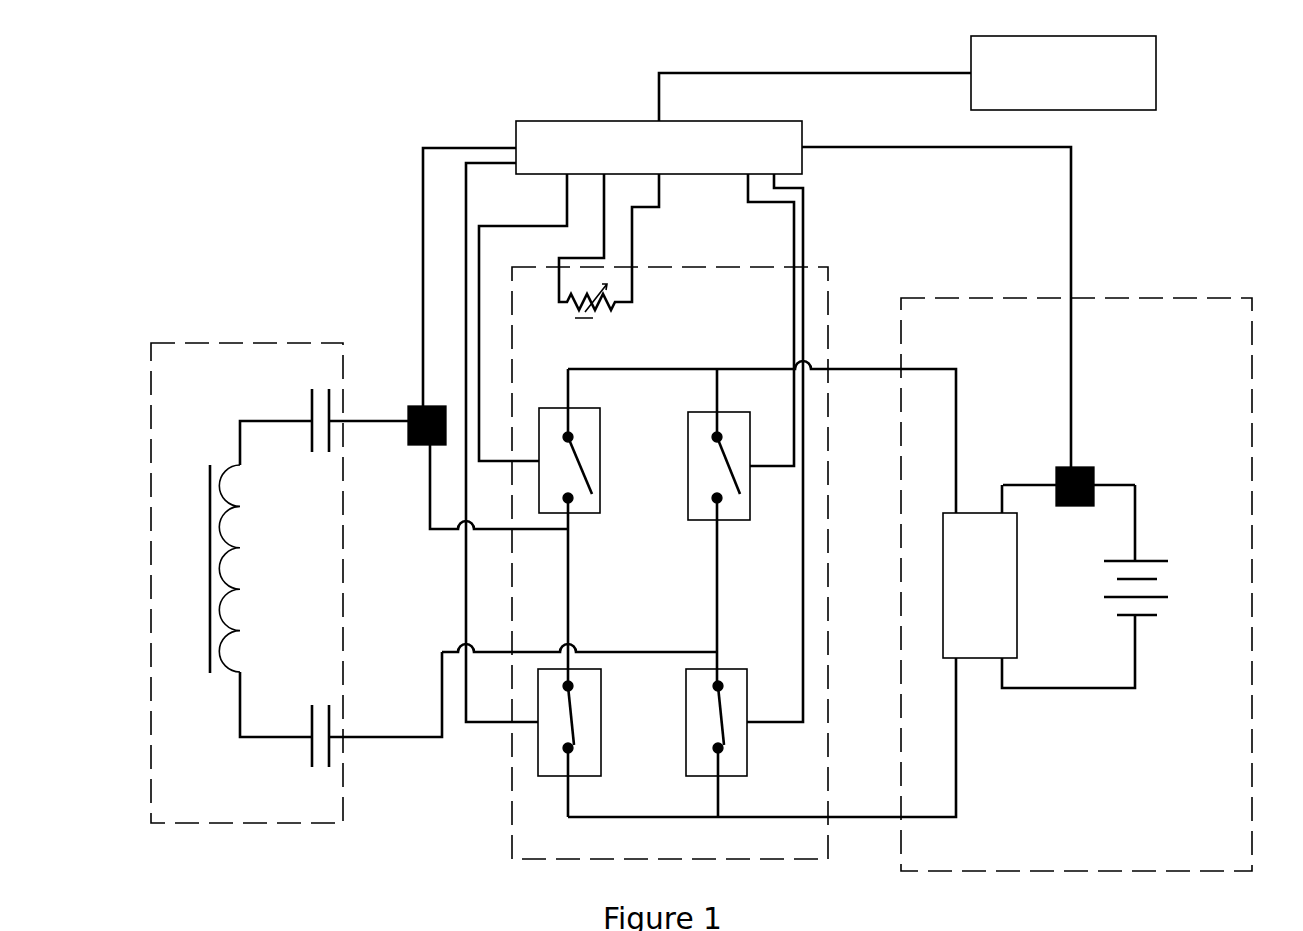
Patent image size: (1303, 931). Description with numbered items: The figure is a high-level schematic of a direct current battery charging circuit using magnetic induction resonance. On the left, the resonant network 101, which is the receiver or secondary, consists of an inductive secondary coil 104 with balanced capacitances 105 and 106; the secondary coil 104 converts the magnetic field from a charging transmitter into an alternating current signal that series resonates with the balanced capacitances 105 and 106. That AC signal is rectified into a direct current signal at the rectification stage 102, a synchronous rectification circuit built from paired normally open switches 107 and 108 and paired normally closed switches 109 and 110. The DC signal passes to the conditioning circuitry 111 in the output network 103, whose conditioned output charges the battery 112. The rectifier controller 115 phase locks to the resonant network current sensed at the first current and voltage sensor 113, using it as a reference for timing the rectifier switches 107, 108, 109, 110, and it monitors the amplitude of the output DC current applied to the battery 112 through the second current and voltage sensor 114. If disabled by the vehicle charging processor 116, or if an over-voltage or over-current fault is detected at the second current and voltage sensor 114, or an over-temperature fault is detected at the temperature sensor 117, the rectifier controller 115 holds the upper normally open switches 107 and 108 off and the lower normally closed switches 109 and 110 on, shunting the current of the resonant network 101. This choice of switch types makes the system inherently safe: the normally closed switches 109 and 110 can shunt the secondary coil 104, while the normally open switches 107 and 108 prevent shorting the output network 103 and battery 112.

The resonant network 101 is at (247, 568).
The rectification stage 102 is at (670, 549).
The output network 103 is at (1076, 573).
The secondary coil 104 is at (200, 569).
The balanced capacitance 105 is at (324, 409).
The balanced capacitance 106 is at (341, 731).
The normally open switch 107 is at (549, 362).
The normally open switch 108 is at (741, 363).
The normally closed switch 109 is at (543, 486).
The normally closed switch 110 is at (744, 492).
The conditioning circuitry 111 is at (1039, 586).
The battery 112 is at (1166, 550).
The first current and voltage sensor 113 is at (394, 408).
The second current and voltage sensor 114 is at (1040, 453).
The rectifier controller 115 is at (659, 147).
The vehicle charging processor 116 is at (907, 78).
The temperature sensor 117 is at (609, 262).